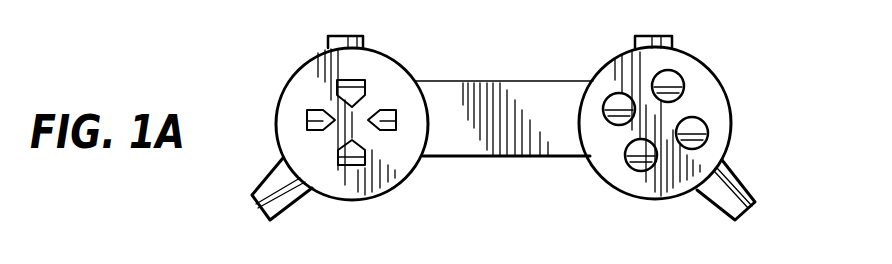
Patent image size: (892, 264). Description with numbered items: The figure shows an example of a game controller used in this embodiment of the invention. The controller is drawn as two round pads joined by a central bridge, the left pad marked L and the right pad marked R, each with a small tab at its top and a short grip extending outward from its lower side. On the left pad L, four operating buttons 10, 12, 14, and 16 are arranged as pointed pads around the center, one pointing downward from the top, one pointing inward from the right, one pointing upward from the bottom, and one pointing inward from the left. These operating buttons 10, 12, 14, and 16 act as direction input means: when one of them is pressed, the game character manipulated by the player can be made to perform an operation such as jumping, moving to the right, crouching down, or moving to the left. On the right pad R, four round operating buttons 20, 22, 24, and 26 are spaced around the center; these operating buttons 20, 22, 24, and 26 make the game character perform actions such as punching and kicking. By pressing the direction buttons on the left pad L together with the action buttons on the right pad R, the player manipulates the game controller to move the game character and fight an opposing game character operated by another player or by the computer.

The left plug body L is at (340, 112).
The right plug body R is at (667, 112).
The operating button 10 is at (362, 80).
The operating button 12 is at (380, 112).
The operating button 14 is at (347, 162).
The operating button 16 is at (312, 111).
The operating button 20 is at (666, 84).
The operating button 22 is at (690, 130).
The operating button 24 is at (640, 162).
The operating button 26 is at (612, 101).